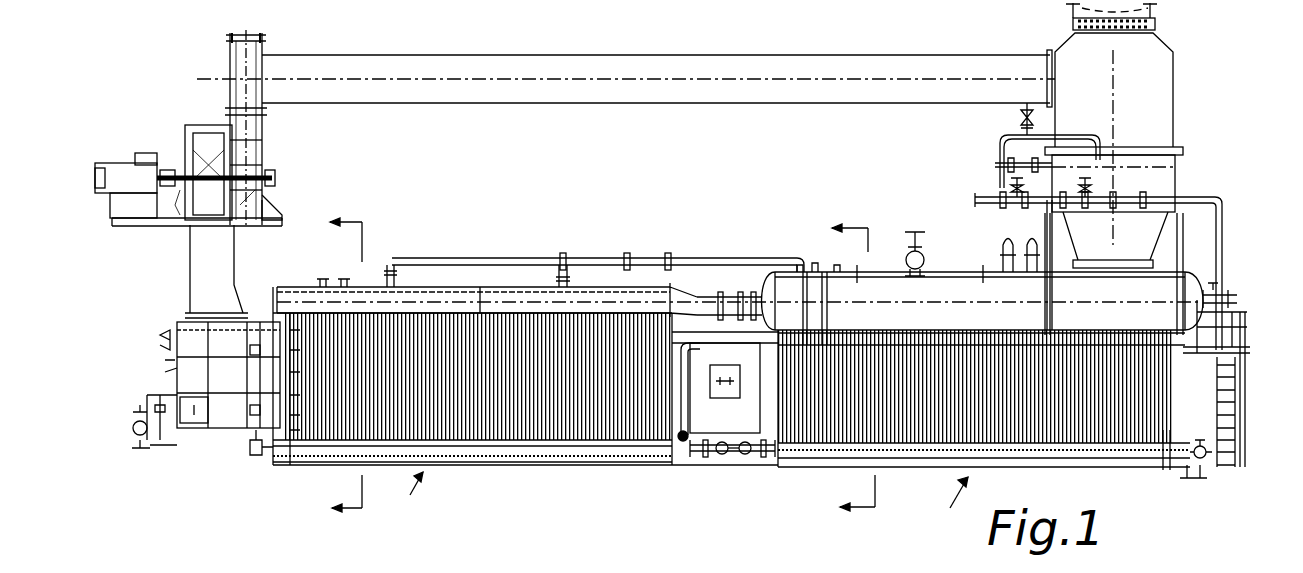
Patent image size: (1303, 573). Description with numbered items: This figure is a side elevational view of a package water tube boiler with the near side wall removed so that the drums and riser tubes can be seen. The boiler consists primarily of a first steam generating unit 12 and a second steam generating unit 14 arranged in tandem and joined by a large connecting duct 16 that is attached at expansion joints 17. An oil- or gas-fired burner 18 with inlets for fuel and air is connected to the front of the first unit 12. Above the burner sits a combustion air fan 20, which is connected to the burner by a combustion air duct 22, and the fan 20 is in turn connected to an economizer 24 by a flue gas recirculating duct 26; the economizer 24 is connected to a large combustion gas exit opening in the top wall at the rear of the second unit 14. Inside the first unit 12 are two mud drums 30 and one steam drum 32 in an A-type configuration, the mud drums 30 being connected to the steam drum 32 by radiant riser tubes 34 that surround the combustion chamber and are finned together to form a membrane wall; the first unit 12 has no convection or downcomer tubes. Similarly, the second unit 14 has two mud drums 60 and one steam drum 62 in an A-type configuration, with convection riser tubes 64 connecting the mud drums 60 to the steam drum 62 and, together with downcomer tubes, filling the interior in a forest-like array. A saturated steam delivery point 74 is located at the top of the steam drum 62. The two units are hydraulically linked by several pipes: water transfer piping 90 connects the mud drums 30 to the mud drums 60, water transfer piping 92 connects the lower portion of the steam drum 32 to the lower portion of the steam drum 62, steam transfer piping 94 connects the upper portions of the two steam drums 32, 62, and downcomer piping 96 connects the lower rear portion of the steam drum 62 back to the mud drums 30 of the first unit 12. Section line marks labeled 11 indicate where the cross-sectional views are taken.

The section line 11- 11 is at (355, 364).
The first steam generating unit 12 is at (641, 370).
The second steam generating unit 14 is at (949, 515).
The connecting duct 16 is at (700, 410).
The expansion joints 17 is at (727, 455).
The burner 18 is at (222, 426).
The combustion air fan 20 is at (182, 226).
The combustion air duct 22 is at (196, 272).
The economizer 24 is at (1093, 62).
The flue gas recirculating duct 26 is at (653, 68).
The mud drums 30 is at (527, 455).
The steam drum 32 is at (422, 297).
The radiant riser tubes 34 is at (298, 466).
The mud drums 60 is at (922, 457).
The steam drum 62 is at (952, 285).
The convection riser tubes 64 is at (1163, 430).
The saturated steam delivery point 74 is at (927, 258).
The water transfer piping 90 is at (715, 458).
The water transfer piping 92 is at (732, 302).
The steam transfer piping 94 is at (547, 262).
The downcomer piping 96 is at (697, 337).